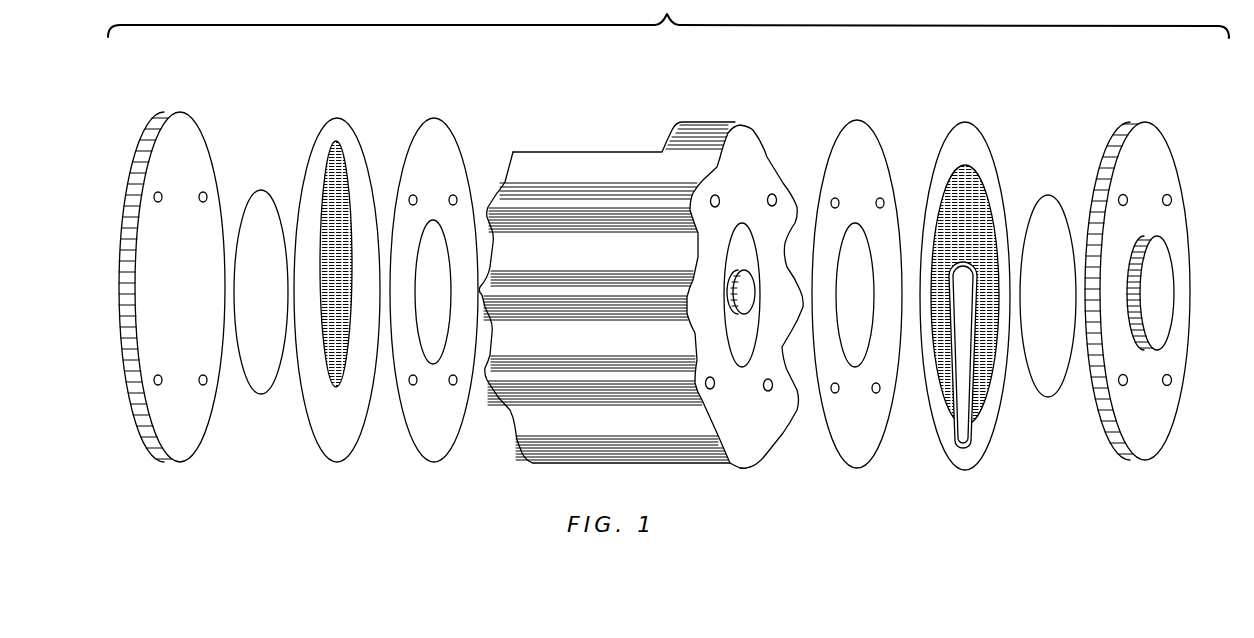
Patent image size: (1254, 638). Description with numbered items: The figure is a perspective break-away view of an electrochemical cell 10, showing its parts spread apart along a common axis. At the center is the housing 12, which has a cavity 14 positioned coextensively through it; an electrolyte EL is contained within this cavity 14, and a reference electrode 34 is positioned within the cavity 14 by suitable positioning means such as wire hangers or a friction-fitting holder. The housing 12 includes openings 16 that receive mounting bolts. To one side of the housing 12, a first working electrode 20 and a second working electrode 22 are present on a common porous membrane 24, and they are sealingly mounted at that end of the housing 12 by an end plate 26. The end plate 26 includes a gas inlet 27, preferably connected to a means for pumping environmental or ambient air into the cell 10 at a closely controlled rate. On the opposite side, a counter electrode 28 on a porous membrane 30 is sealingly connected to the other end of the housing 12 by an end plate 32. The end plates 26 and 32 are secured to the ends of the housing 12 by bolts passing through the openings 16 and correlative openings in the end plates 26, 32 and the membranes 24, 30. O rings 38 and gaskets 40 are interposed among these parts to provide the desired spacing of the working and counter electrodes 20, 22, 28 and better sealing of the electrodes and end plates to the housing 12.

The electrochemical cell 10 is at (517, 128).
The housing 12 is at (590, 152).
The cavity 14 is at (762, 430).
The openings 16 is at (748, 285).
The first working electrode 20 is at (967, 437).
The second working electrode 22 is at (955, 180).
The porous membrane 24 is at (977, 297).
The end plate 26 is at (1166, 269).
The gas inlet 27 is at (1153, 260).
The counter electrode 28 is at (345, 160).
The porous membrane 30 is at (330, 271).
The end plate 32 is at (155, 132).
The reference electrode 34 is at (748, 310).
The O rings 38 is at (268, 383).
The gaskets 40 is at (457, 432).
The electrolyte EL is at (750, 243).